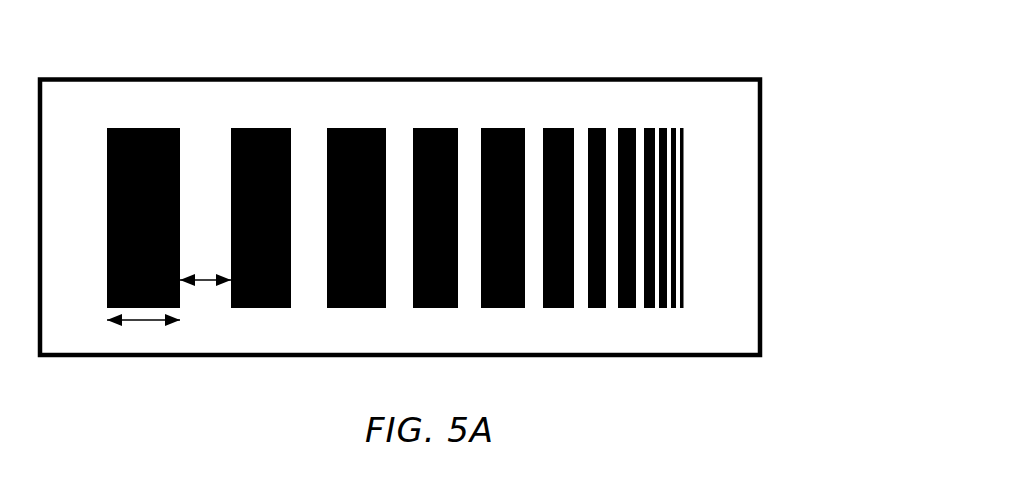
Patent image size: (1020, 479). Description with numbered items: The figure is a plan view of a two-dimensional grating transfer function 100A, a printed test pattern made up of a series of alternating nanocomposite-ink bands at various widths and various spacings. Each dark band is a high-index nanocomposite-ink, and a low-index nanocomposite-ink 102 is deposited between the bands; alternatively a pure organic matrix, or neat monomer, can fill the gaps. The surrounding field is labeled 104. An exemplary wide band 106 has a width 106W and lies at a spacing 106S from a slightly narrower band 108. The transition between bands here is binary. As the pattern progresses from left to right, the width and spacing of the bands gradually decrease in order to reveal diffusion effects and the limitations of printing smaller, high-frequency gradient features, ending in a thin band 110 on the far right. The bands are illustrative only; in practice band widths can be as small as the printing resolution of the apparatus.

The 2-dimensional grating transfer function 100A is at (805, 211).
The low-index nanocomposite-ink 102 is at (159, 273).
The background substrate region 104 is at (93, 230).
The wide band 106 is at (158, 128).
The width 106W is at (140, 322).
The spacing 106S is at (203, 283).
The slightly narrower band 108 is at (267, 128).
The thin band 110 is at (683, 147).